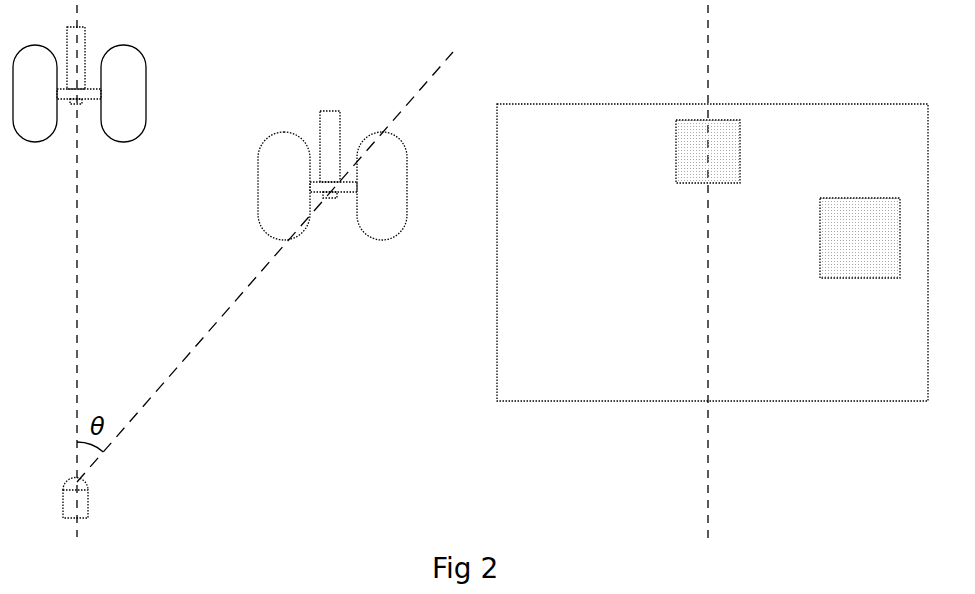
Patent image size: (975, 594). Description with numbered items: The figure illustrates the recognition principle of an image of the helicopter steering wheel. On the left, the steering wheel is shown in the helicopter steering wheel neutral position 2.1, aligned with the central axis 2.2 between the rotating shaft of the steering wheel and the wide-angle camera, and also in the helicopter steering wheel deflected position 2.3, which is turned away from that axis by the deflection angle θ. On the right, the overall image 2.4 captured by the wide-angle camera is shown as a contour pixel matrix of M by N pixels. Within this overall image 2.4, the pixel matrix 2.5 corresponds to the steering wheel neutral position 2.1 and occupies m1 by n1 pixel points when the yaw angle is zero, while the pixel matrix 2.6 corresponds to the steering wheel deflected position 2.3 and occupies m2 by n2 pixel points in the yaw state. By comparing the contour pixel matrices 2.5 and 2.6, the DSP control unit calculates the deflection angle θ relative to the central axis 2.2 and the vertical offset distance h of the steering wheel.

The helicopter steering wheel neutral position 2.1 is at (150, 105).
The central axis between a rotating shaft of the helicopter steering wheel and a wid 2.2 is at (85, 242).
The helicopter steering wheel deflected position 2.3 is at (331, 212).
The overall image captured by the wide-angle camera 2.4 is at (490, 349).
The pixel matrix of an image for the helicopter steering wheel neutral position 2.5 is at (680, 183).
The pixel matrix of a position image of the steering wheel when the helicopter is in 2.6 is at (826, 278).